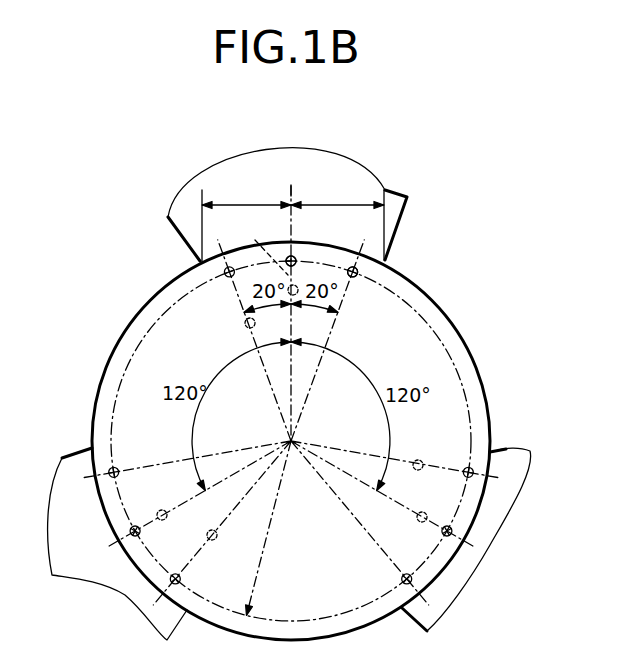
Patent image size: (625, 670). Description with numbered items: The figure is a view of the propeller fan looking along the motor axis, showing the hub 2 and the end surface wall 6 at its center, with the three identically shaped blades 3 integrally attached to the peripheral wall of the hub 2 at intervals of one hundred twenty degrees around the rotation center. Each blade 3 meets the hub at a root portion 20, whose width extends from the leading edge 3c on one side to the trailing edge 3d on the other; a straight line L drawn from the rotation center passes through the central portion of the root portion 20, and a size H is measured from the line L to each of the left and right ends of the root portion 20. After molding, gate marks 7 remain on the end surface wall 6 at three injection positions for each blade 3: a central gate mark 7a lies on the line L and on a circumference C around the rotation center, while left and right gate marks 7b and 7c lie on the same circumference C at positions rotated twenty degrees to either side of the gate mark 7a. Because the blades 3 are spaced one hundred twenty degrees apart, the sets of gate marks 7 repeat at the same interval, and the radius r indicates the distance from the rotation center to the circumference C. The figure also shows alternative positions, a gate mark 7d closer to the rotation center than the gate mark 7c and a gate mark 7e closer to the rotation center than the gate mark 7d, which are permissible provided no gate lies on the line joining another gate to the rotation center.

The hub 2 is at (480, 375).
The blade 3 is at (315, 168).
The leading edge 3c is at (187, 243).
The trailing edge 3d is at (407, 217).
The end surface wall 6 is at (447, 422).
The gate marks 7 is at (172, 578).
The central gate mark 7a is at (293, 256).
The left gate mark 7b is at (225, 270).
The right gate mark 7c is at (362, 276).
The gate mark 7d is at (268, 240).
The gate mark 7e is at (245, 323).
The root portion 20 is at (352, 266).
The circumference C is at (448, 328).
The size H is at (293, 223).
The straight line L is at (289, 185).
The radius r is at (268, 528).